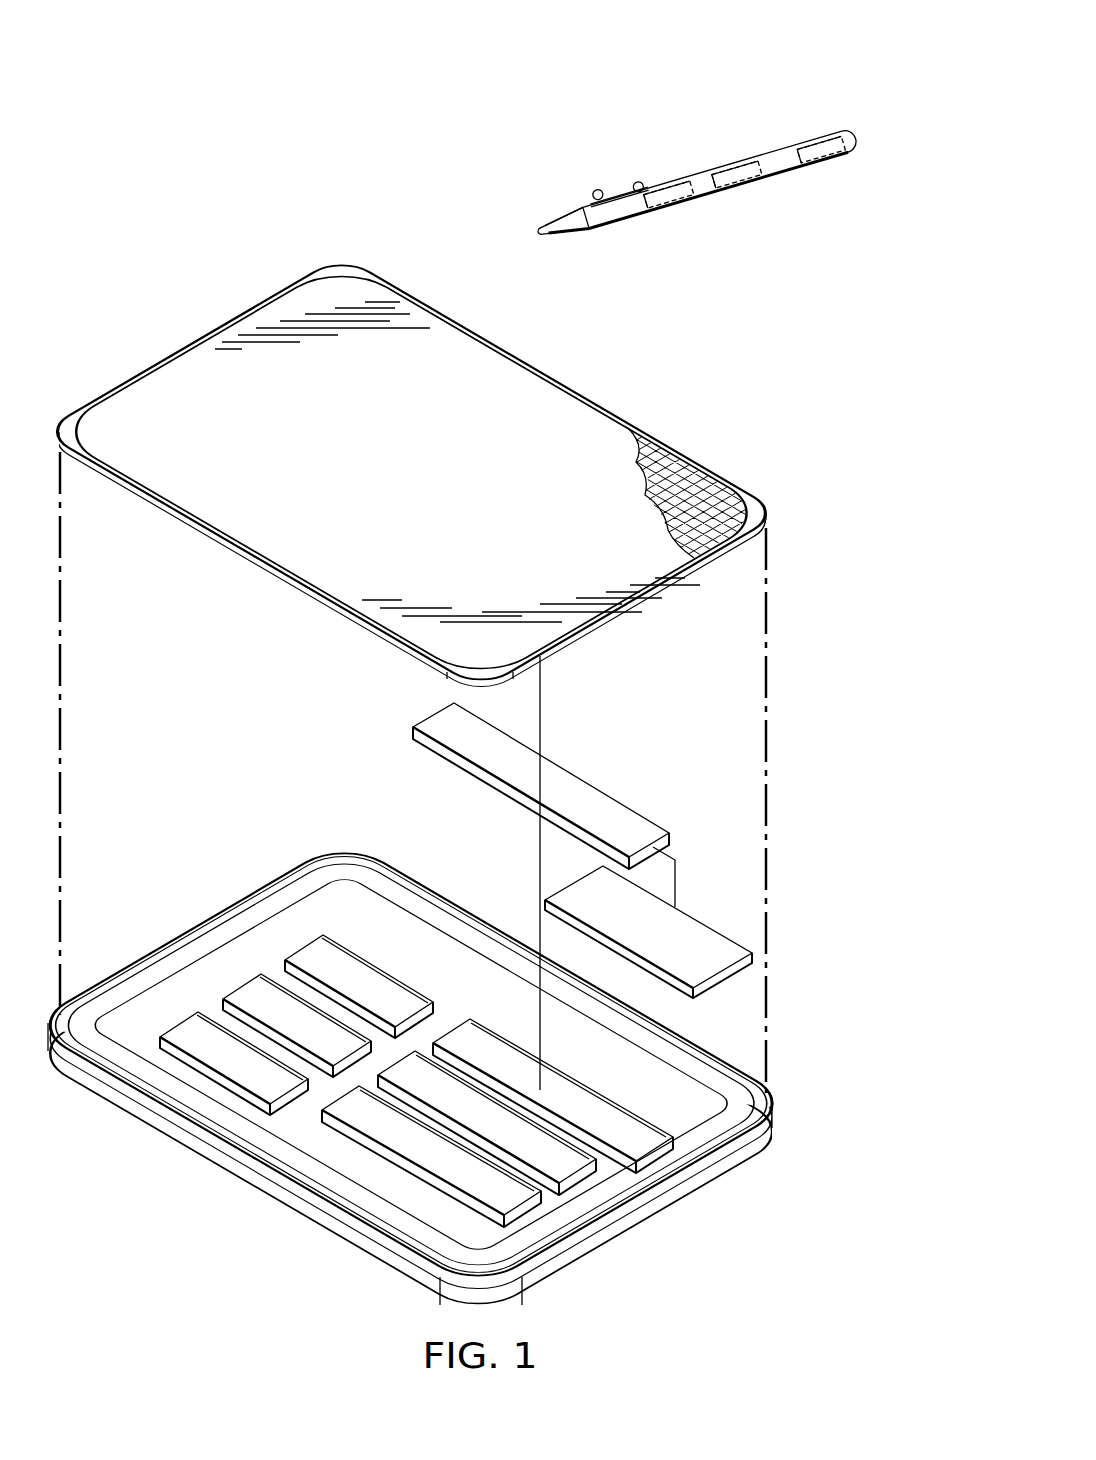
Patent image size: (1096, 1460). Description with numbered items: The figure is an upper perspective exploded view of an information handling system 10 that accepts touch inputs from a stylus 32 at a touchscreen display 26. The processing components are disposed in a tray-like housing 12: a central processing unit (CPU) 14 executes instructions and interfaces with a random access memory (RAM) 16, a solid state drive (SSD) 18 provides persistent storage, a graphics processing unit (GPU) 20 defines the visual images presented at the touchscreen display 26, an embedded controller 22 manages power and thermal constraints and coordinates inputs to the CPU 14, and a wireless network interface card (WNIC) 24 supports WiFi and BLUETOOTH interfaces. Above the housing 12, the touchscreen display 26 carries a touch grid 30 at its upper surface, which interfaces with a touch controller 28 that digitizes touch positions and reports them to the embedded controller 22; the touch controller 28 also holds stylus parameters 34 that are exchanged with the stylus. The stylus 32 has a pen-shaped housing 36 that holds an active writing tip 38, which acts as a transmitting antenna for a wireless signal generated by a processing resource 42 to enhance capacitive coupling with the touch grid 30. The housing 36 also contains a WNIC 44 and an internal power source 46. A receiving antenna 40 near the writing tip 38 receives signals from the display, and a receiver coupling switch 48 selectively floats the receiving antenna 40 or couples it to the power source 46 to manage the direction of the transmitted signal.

The information handling system 10 is at (263, 1222).
The housing 12 is at (160, 1126).
The central processing unit (CPU) 14 is at (312, 945).
The random access memory (RAM) 16 is at (255, 983).
The solid state drive (SSD) 18 is at (200, 1018).
The graphics processing unit (GPU) 20 is at (560, 1166).
The embedded controller 22 is at (617, 1136).
The wireless network interface card (WNIC) 24 is at (502, 1198).
The touchscreen display 26 is at (411, 476).
The touch controller 28 is at (588, 787).
The touch grid 30 is at (720, 495).
The stylus 32 is at (681, 184).
The stylus parameters 34 is at (706, 926).
The housing 36 is at (776, 158).
The writing tip 38 is at (535, 233).
The receiving antenna 40 is at (560, 232).
The processing resource 42 is at (680, 202).
The WNIC 44 is at (742, 176).
The power source 46 is at (825, 160).
The receiver coupling switch 48 is at (615, 117).